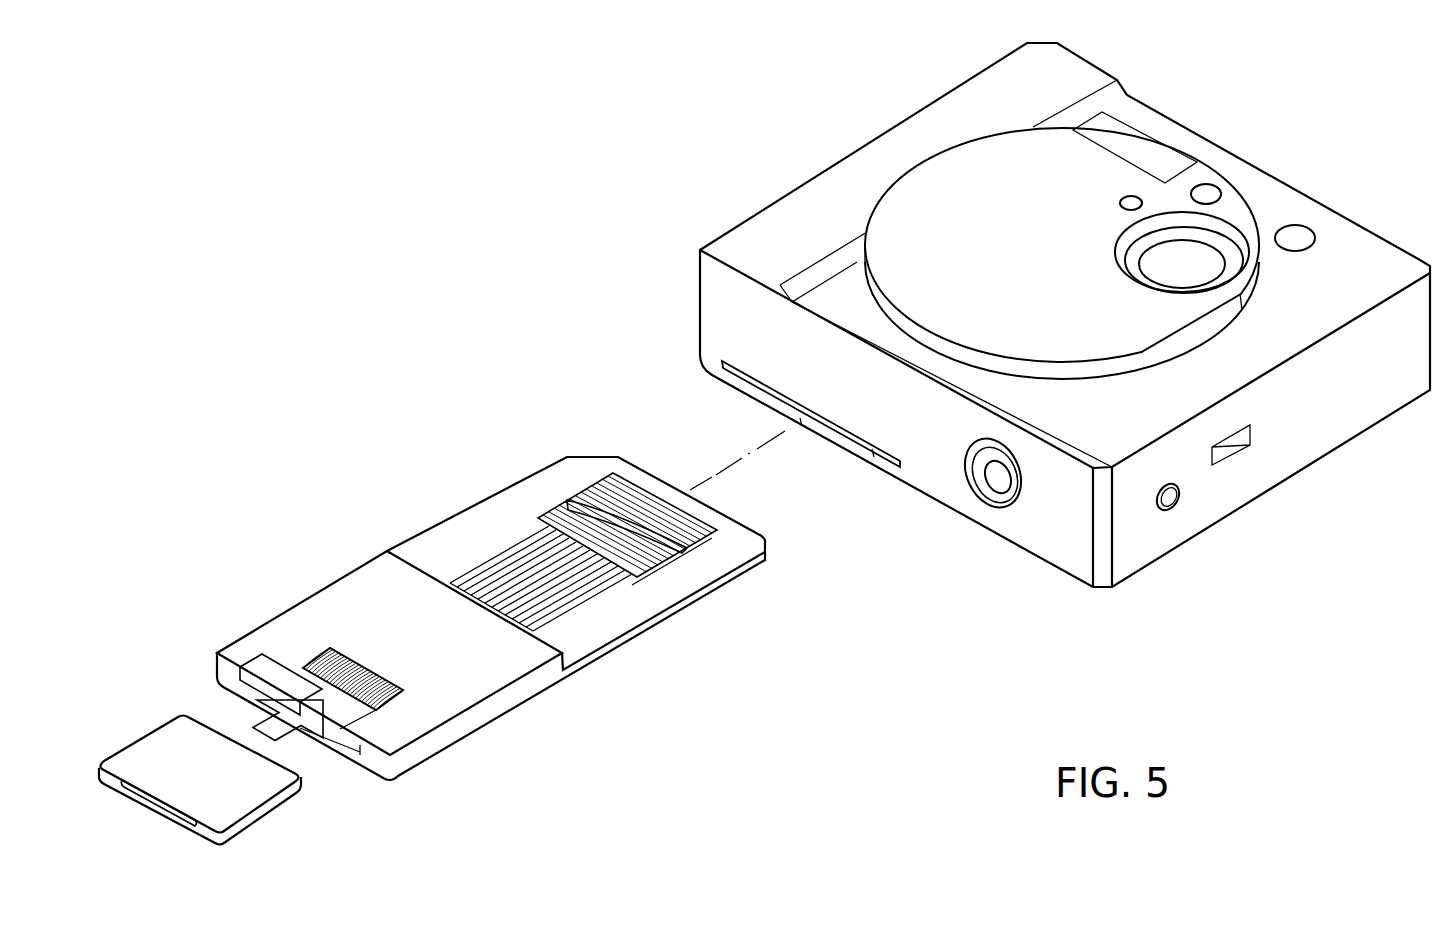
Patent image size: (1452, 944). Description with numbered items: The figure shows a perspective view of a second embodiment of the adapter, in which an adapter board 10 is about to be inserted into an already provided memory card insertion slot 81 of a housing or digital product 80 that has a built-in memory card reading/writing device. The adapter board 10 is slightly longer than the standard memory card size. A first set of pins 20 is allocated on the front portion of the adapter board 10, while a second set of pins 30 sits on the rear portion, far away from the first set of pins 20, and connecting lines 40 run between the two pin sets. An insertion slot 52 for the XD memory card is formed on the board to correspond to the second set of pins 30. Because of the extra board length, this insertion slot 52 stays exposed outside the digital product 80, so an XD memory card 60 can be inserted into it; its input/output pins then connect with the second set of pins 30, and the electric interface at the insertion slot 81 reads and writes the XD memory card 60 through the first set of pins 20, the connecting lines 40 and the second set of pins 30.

The adapter board 10 is at (458, 530).
The first set of pins 20 is at (555, 510).
The second set of pins 30 is at (372, 703).
The connecting lines 40 is at (580, 602).
The insertion slot for the XD memory card 52 is at (292, 685).
The XD memory card 60 is at (170, 753).
The digital product 80 is at (837, 185).
The memory card insertion slot 81 is at (875, 453).